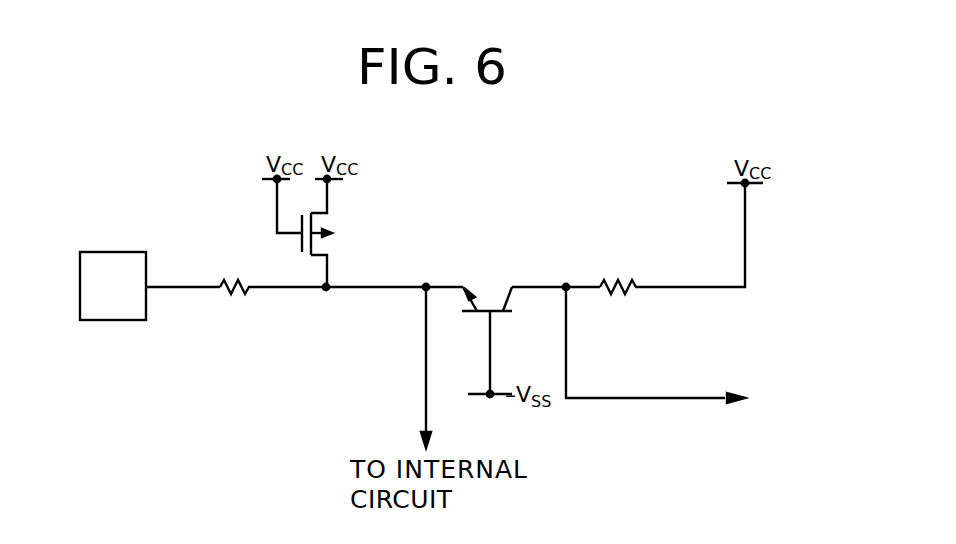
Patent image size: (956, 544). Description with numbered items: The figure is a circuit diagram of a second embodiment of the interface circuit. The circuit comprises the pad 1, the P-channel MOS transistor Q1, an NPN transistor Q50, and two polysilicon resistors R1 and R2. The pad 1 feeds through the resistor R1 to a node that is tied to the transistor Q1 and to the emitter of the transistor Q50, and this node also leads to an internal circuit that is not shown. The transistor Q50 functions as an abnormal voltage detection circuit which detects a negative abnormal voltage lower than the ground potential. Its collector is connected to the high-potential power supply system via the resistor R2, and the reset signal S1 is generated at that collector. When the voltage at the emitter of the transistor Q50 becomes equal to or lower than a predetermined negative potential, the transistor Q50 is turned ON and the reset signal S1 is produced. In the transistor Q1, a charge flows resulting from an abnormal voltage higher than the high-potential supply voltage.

The pad 1 is at (106, 250).
The polysilicon resistor R1 is at (235, 306).
The polysilicon resistor R2 is at (620, 307).
The P-channel MOS transistor Q1 is at (335, 234).
The NPN transistor Q50 is at (492, 286).
The reset signal S1 is at (676, 398).